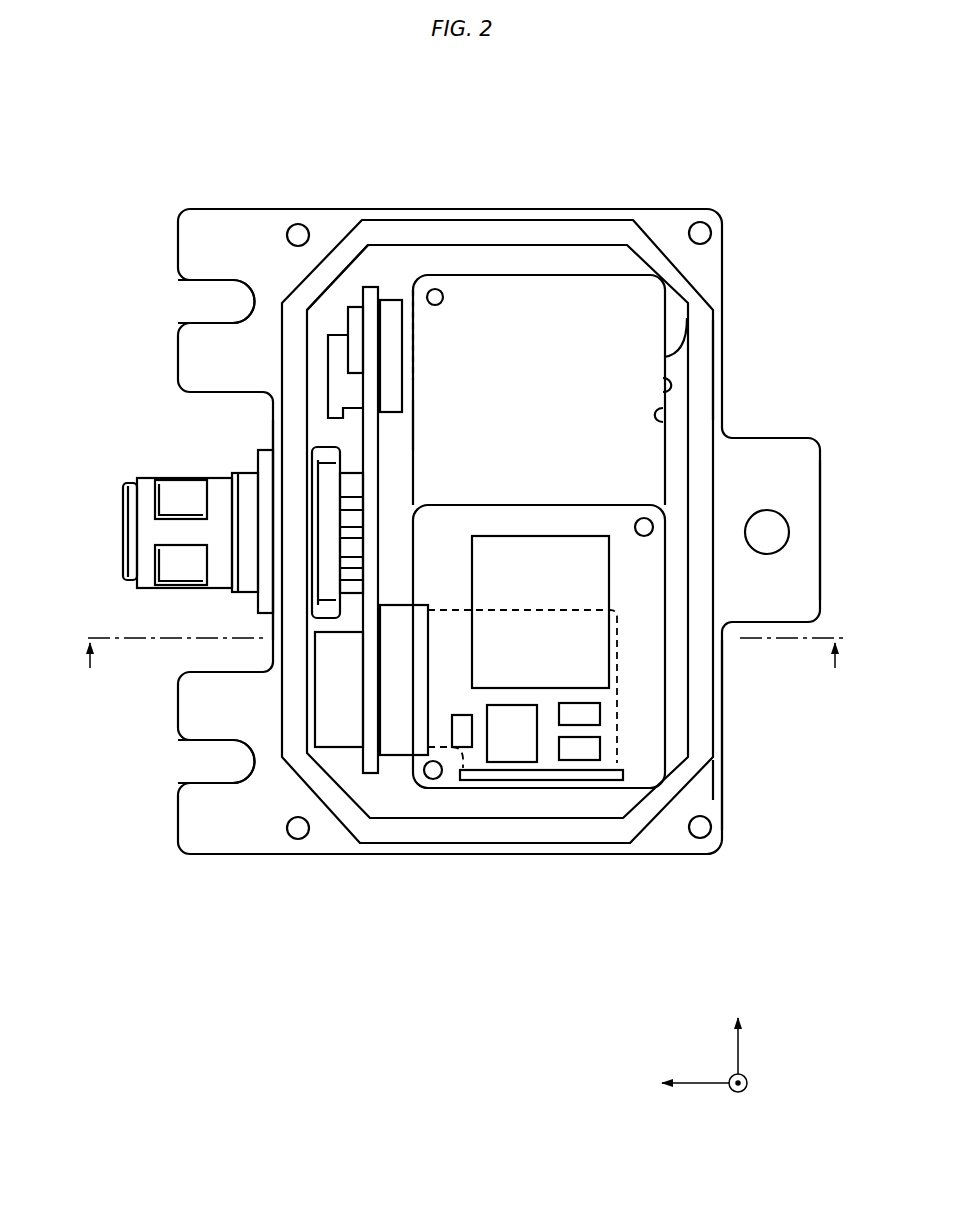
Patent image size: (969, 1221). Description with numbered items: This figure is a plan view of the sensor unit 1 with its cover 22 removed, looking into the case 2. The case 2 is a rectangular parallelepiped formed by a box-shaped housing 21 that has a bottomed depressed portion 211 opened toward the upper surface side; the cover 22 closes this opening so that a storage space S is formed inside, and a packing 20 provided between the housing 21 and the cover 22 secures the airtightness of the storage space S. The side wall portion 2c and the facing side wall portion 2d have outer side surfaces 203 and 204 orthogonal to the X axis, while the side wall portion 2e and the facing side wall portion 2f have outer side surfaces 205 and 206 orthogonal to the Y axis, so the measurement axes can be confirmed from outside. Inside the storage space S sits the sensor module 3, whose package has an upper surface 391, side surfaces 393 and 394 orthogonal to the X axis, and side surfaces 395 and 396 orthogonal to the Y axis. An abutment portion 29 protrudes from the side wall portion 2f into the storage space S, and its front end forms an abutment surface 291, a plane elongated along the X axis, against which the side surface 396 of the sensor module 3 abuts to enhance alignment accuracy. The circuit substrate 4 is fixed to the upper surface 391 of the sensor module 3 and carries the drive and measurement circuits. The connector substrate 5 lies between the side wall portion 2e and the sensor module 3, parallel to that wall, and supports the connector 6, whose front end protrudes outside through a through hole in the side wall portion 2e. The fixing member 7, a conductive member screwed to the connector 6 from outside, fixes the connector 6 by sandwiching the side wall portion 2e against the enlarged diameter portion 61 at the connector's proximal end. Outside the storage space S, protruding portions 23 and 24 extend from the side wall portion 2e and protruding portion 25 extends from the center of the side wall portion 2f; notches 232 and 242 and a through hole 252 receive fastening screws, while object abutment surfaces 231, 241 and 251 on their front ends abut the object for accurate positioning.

The sensor unit 1 is at (760, 114).
The case 2 is at (641, 204).
The side wall portion 2c is at (610, 213).
The side wall portion 2d is at (432, 849).
The side wall portion 2e is at (278, 382).
The side wall portion 2f is at (718, 667).
The sensor module 3 is at (521, 268).
The circuit substrate 4 is at (530, 797).
The connector substrate 5 is at (368, 780).
The connector 6 is at (118, 527).
The fixing member 7 is at (250, 492).
The packing 20 is at (700, 332).
The housing 21 is at (717, 798).
The cover 22 is at (460, 290).
The protruding portion 23 is at (205, 220).
The protruding portion 24 is at (243, 846).
The protruding portion 25 is at (805, 578).
The abutment portion 29 is at (675, 470).
The enlarged diameter portion 61 is at (318, 566).
The side surface 203 is at (500, 210).
The side surface 204 is at (495, 856).
The side surface 205 is at (275, 706).
The side surface 206 is at (722, 358).
The depressed portion 211 is at (386, 257).
The object abutment surface 231 is at (177, 357).
The notch 232 is at (223, 293).
The object abutment surface 241 is at (177, 713).
The notch 242 is at (227, 763).
The object abutment surface 251 is at (820, 540).
The through hole 252 is at (770, 520).
The abutment surface 291 is at (663, 412).
The upper surface 391 is at (643, 307).
The side surface 393 is at (585, 272).
The side surface 394 is at (585, 790).
The side surface 395 is at (412, 425).
The side surface 396 is at (663, 383).
The storage space S is at (615, 802).